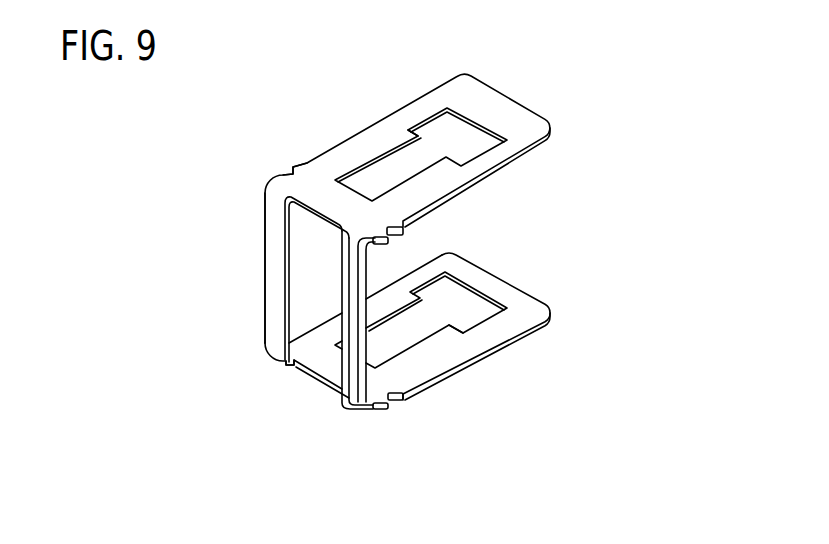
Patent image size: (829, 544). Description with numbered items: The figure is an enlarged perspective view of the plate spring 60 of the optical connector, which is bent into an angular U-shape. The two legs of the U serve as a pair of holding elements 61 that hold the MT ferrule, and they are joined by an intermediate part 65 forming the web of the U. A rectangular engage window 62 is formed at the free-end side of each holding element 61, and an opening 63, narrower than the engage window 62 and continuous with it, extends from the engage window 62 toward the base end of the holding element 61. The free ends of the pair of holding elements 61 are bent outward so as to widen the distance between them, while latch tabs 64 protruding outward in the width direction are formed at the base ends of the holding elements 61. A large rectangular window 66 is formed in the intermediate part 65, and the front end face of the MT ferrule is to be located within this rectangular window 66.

The plate spring 60 is at (540, 102).
The holding element 61 is at (423, 107).
The engage window 62 is at (478, 125).
The opening 63 is at (378, 157).
The latch tab 64 is at (294, 163).
The intermediate part 65 is at (272, 232).
The rectangular window 66 is at (283, 297).